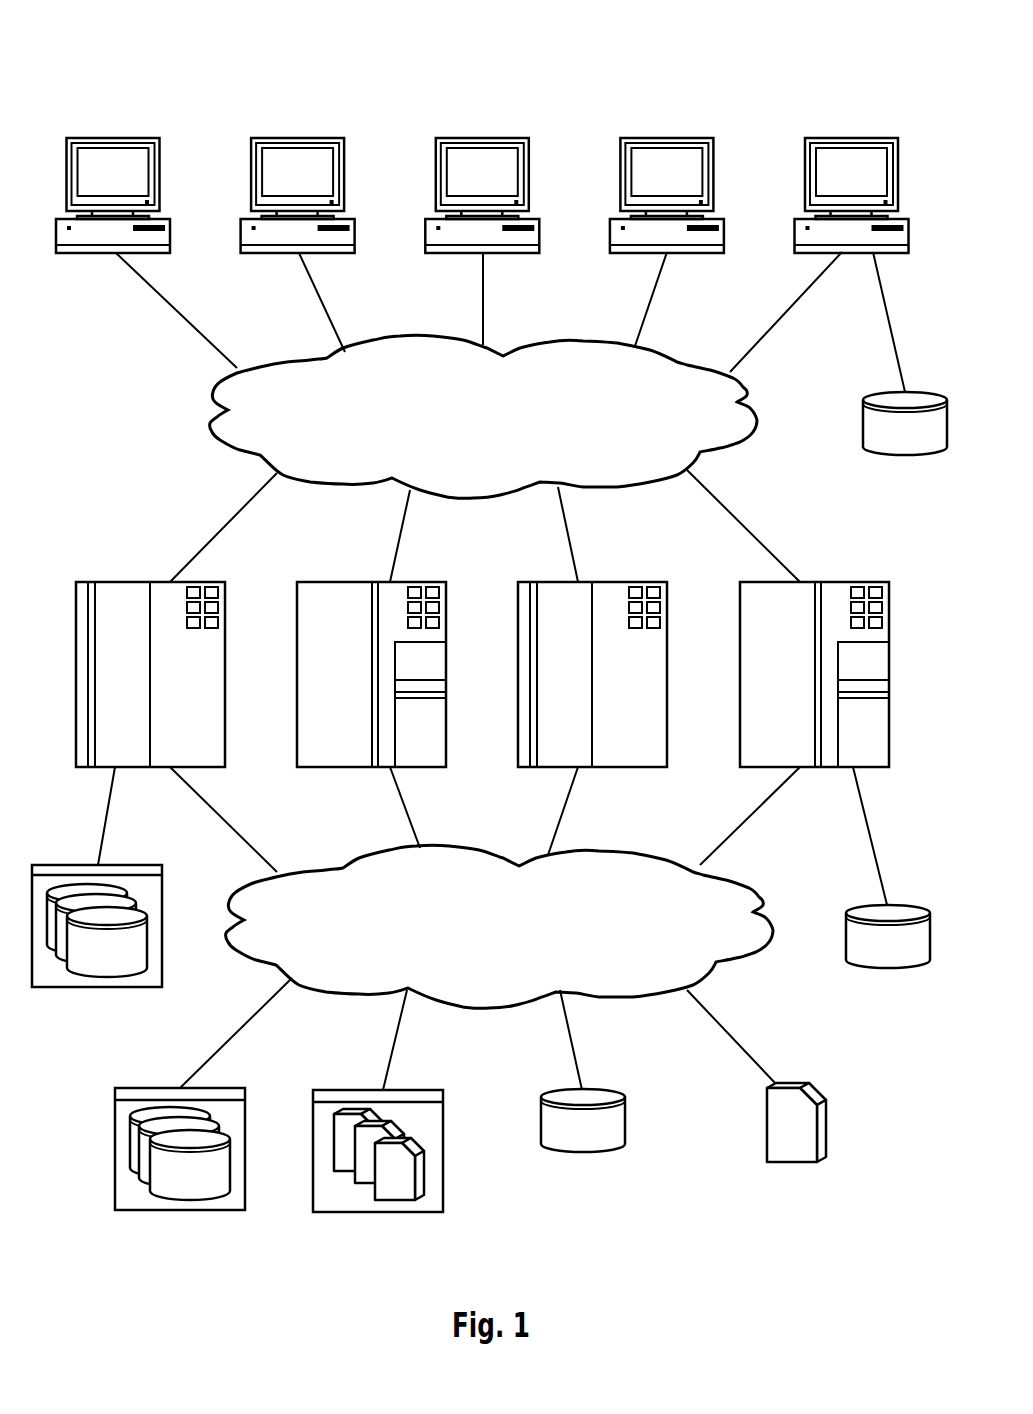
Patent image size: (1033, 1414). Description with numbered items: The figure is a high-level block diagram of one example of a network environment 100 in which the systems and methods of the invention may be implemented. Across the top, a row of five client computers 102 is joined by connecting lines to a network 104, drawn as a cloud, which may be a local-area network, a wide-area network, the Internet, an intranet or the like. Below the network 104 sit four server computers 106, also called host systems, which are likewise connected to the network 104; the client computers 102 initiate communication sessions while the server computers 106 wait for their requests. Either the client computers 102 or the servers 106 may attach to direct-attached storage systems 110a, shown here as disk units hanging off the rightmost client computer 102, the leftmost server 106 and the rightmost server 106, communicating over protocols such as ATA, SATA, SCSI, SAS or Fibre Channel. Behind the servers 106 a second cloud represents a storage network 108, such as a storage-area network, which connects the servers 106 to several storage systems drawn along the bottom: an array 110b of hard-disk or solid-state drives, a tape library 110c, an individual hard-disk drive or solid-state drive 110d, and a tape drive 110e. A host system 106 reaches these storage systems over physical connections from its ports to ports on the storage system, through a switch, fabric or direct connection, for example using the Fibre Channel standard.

The network environment 100 is at (192, 66).
The client computer 102 is at (95, 181).
The network 104 is at (467, 442).
The server computer 106 is at (104, 683).
The storage network 108 is at (483, 952).
The direct-attached storage system 110a is at (907, 455).
The array of hard-disk drives or solid-state drives 110b is at (180, 1210).
The tape library 110c is at (380, 1212).
The individual hard-disk drive or solid-state drive 110d is at (582, 1155).
The tape drive 110e is at (790, 1163).